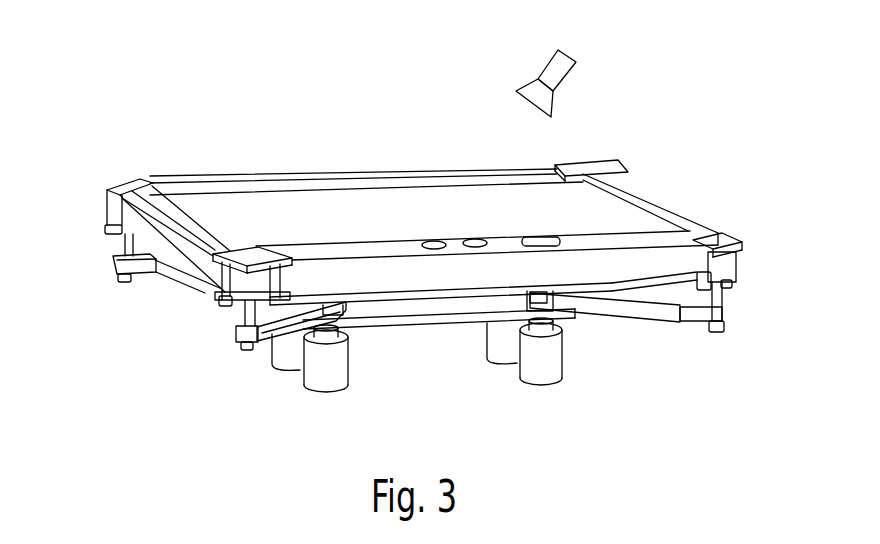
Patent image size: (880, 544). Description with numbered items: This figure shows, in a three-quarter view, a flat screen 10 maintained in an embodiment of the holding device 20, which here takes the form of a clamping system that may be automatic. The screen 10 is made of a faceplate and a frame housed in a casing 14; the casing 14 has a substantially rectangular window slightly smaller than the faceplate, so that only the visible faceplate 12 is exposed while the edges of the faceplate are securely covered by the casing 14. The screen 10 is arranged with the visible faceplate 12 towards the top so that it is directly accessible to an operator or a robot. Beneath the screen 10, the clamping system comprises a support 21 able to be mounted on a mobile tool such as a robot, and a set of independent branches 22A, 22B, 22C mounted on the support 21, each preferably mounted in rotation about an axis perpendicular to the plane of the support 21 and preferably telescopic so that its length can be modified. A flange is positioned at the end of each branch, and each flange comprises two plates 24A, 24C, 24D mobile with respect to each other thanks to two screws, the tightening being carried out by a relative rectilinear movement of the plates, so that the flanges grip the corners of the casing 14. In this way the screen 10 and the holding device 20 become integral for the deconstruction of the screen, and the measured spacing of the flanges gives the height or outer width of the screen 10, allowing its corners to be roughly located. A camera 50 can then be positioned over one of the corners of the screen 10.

The flat screen 10 is at (433, 186).
The visible faceplate 12 is at (390, 221).
The casing 14 is at (669, 189).
The holding device 20 is at (408, 340).
The support 21 is at (427, 346).
The branch 22A is at (662, 334).
The branch 22B is at (260, 353).
The branch 22C is at (139, 293).
The plates of flange 24A is at (738, 221).
The plates of flange 24C is at (131, 172).
The plates of flange 24D is at (621, 156).
The camera 50 is at (586, 48).